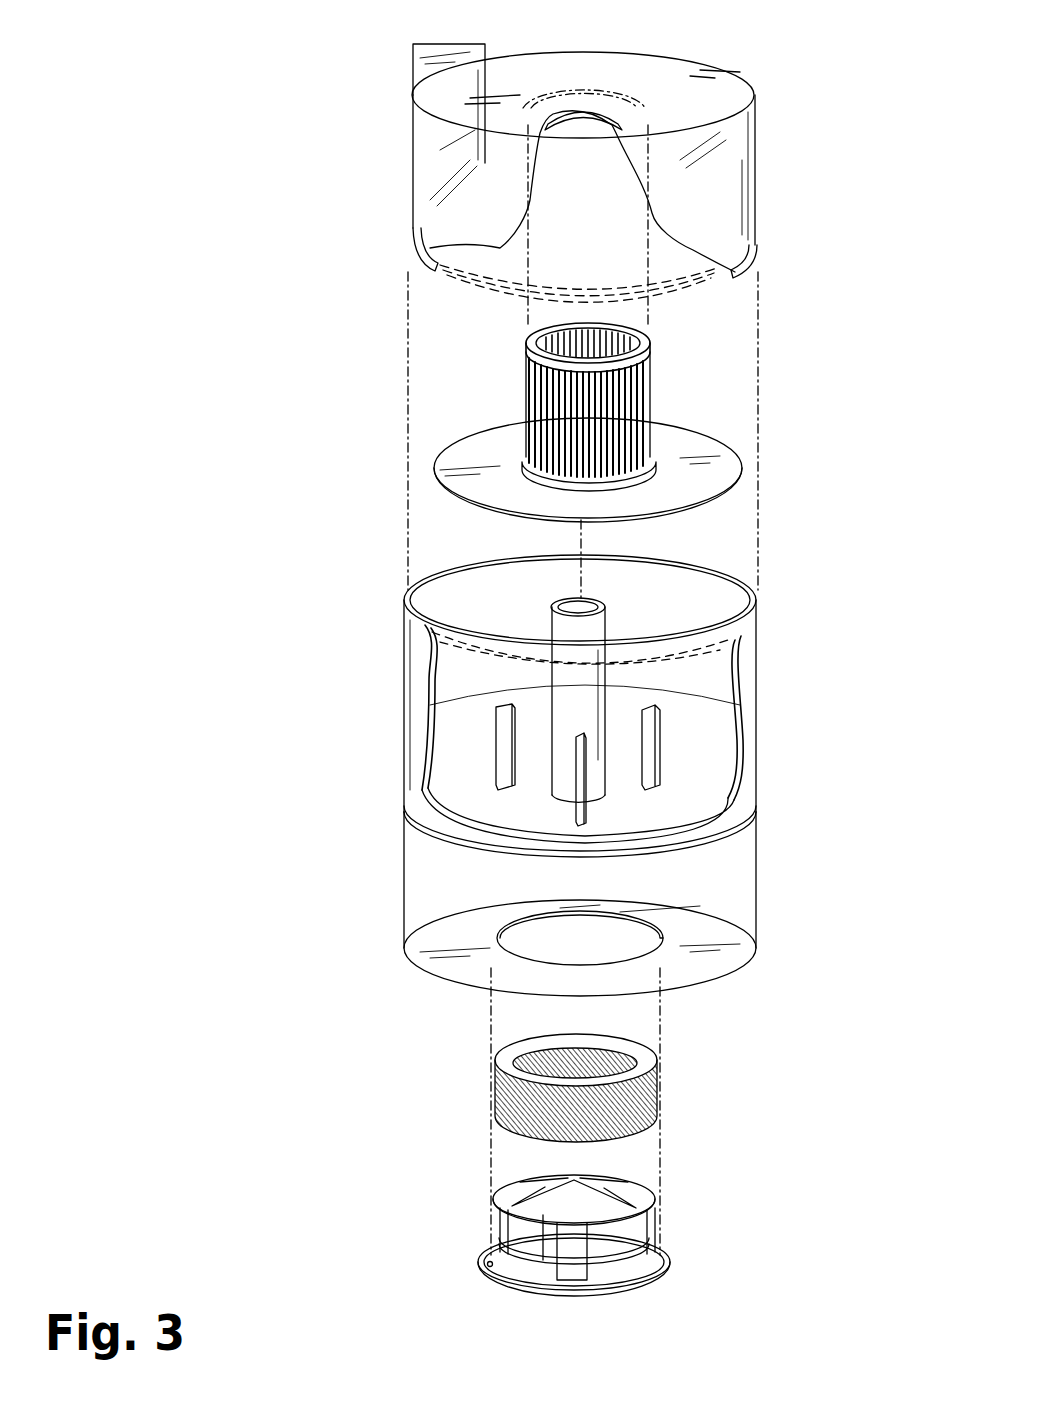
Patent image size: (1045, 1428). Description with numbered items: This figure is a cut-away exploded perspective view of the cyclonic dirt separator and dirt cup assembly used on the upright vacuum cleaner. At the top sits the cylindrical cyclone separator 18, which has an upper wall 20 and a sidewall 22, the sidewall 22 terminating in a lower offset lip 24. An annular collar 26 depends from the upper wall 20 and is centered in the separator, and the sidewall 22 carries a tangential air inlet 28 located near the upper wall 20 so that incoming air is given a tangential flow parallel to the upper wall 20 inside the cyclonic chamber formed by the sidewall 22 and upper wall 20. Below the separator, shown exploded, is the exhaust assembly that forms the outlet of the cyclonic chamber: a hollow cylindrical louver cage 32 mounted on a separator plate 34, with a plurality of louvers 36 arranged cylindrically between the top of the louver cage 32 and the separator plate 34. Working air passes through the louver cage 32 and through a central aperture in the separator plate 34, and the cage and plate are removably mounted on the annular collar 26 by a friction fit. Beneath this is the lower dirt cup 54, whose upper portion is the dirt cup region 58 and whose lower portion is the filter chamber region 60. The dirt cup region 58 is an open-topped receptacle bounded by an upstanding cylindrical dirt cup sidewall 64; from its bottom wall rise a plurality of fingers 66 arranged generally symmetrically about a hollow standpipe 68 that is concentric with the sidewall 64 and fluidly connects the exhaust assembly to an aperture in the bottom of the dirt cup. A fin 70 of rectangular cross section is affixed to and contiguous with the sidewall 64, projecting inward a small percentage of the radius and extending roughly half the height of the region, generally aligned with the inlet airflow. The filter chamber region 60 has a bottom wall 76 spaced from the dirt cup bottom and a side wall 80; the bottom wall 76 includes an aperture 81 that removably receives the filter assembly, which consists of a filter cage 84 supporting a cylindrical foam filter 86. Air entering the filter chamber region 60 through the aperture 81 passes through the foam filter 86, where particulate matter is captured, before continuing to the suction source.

The cyclone separator 18 is at (337, 478).
The upper wall 20 is at (545, 62).
The sidewall 22 is at (756, 134).
The lower offset lip 24 is at (762, 252).
The annular collar 26 is at (616, 137).
The tangential air inlet 28 is at (434, 147).
The louver cage 32 is at (650, 347).
The separator plate 34 is at (695, 483).
The louvers 36 is at (642, 396).
The container assembly 54 is at (291, 1290).
The dirt cup region 58 is at (872, 563).
The filter chamber region 60 is at (762, 856).
The dirt cup sidewall 64 is at (746, 649).
The fingers 66 is at (506, 745).
The hollow standpipe 68 is at (604, 611).
The fin 70 is at (430, 718).
The bottom wall 76 is at (448, 968).
The side wall 80 is at (754, 904).
The aperture 81 is at (590, 949).
The filter cage 84 is at (484, 1258).
The cylindrical foam filter 86 is at (497, 1092).